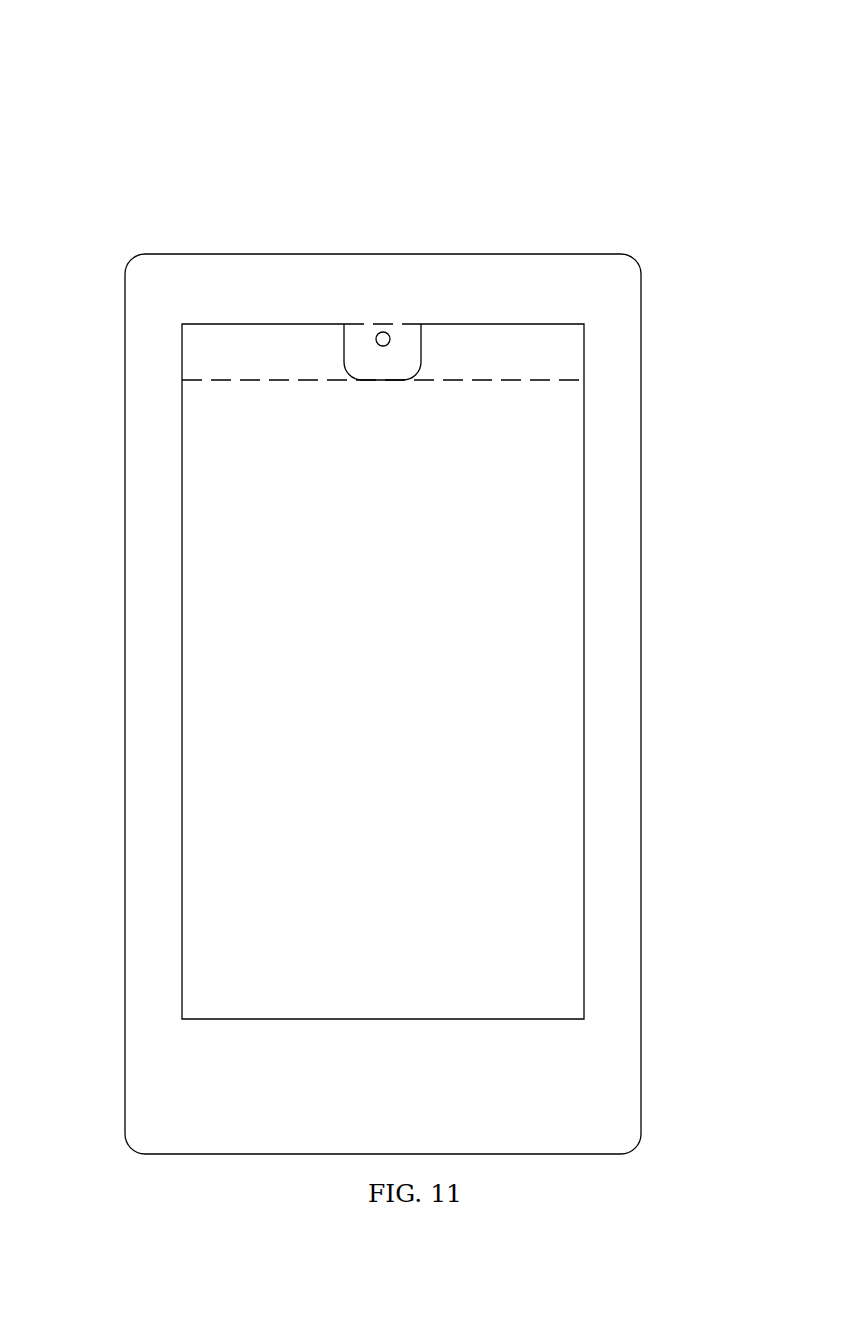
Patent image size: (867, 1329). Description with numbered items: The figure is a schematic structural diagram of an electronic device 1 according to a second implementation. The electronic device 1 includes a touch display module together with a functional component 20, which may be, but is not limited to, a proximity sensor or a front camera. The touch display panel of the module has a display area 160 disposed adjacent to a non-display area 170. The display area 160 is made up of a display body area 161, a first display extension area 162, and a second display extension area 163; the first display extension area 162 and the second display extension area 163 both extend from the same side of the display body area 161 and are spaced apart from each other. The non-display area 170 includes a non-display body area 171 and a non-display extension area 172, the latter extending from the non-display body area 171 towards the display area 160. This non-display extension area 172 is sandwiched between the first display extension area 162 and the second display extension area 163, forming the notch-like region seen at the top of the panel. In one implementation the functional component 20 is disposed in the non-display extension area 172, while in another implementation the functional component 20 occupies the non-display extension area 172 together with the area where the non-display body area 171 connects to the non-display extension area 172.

The electronic device 1 is at (518, 41).
The functional component 20 is at (380, 347).
The display area 160 is at (445, 160).
The display body area 161 is at (283, 412).
The first display extension area 162 is at (239, 352).
The second display extension area 163 is at (458, 353).
The non-display area 170 is at (727, 355).
The non-display body area 171 is at (619, 435).
The non-display extension area 172 is at (406, 356).